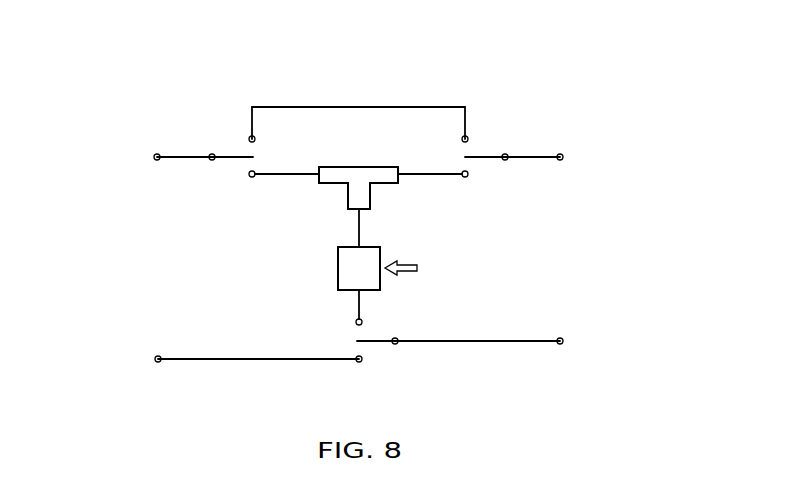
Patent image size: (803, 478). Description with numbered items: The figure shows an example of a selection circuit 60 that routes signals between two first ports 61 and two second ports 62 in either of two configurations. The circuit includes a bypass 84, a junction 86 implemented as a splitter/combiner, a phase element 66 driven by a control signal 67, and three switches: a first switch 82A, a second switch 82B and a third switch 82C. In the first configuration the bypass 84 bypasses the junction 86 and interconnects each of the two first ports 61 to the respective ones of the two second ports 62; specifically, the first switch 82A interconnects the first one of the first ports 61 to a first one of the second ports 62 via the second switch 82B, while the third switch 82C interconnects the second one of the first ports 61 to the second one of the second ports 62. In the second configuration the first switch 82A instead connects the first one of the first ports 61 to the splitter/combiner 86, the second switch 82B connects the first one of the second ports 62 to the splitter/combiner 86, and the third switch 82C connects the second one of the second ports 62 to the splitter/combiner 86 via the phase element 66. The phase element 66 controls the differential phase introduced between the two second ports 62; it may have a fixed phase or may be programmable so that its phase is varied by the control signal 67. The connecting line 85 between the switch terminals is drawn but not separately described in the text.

The selection circuit 60 is at (508, 78).
The first port 61 is at (155, 153).
The second port 62 is at (562, 153).
The phase element 66 is at (338, 268).
The control signal 67 is at (416, 269).
The first switch 82A is at (233, 178).
The second switch 82B is at (491, 177).
The third switch 82C is at (384, 364).
The bypass 84 is at (230, 134).
The connecting line 85 is at (365, 107).
The junction 86 is at (365, 167).